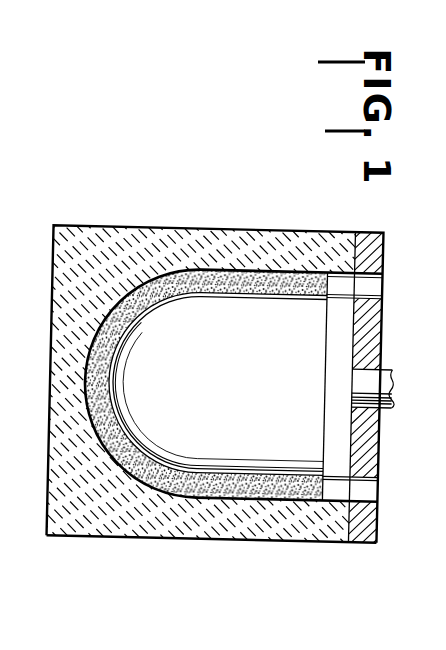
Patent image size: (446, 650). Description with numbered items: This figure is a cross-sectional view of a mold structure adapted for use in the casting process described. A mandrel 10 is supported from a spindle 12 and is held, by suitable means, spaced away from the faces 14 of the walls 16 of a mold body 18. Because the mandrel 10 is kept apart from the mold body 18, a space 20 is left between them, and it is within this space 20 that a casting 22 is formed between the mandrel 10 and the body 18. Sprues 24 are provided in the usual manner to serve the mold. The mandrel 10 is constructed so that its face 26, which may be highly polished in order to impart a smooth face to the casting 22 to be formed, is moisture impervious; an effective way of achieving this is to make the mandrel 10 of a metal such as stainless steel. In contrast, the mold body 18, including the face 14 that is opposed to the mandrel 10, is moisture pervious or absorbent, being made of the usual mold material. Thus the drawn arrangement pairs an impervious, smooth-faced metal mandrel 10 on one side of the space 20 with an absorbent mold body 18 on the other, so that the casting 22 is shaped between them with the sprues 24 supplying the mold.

The mandrel 10 is at (215, 383).
The spindle 12 is at (363, 383).
The faces of walls 14 is at (177, 278).
The walls 16 is at (311, 525).
The mold body 18 is at (166, 518).
The space 20 is at (226, 525).
The casting 22 is at (278, 487).
The sprues 24 is at (350, 275).
The face 26 is at (210, 288).